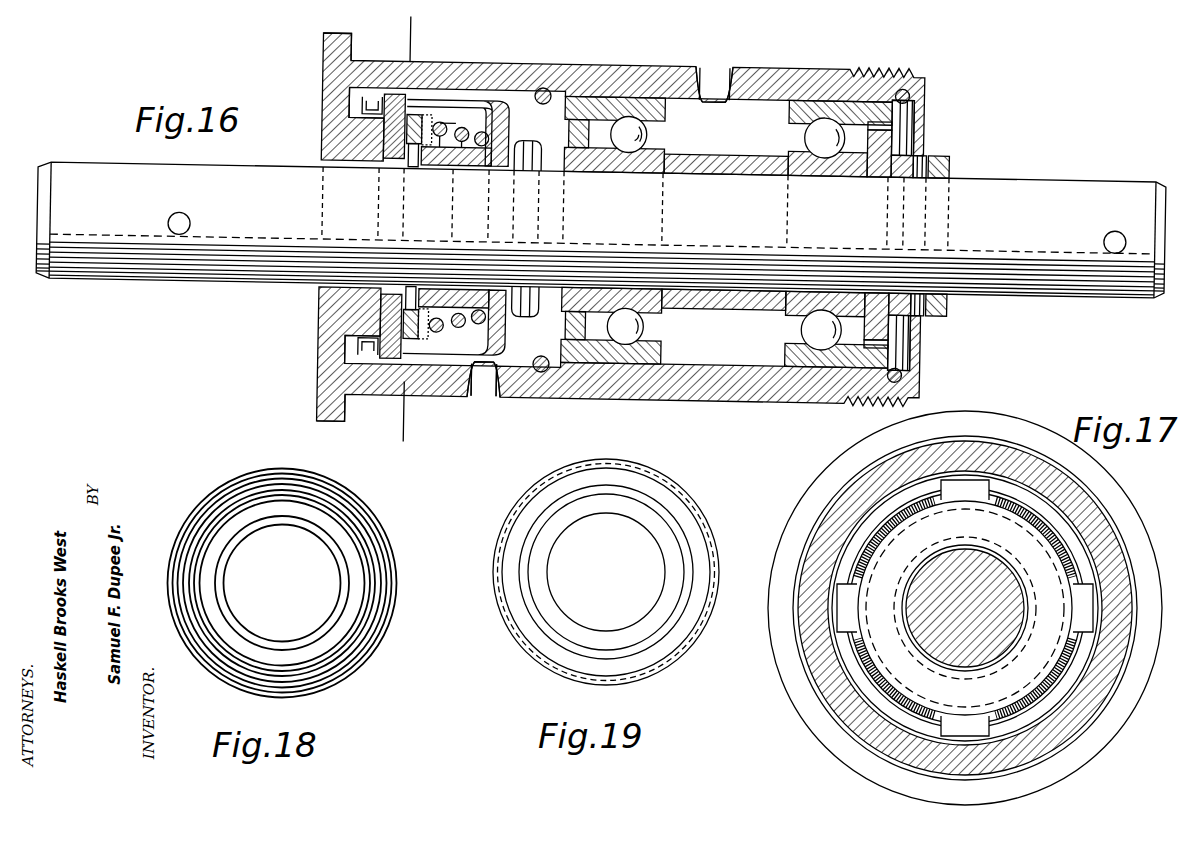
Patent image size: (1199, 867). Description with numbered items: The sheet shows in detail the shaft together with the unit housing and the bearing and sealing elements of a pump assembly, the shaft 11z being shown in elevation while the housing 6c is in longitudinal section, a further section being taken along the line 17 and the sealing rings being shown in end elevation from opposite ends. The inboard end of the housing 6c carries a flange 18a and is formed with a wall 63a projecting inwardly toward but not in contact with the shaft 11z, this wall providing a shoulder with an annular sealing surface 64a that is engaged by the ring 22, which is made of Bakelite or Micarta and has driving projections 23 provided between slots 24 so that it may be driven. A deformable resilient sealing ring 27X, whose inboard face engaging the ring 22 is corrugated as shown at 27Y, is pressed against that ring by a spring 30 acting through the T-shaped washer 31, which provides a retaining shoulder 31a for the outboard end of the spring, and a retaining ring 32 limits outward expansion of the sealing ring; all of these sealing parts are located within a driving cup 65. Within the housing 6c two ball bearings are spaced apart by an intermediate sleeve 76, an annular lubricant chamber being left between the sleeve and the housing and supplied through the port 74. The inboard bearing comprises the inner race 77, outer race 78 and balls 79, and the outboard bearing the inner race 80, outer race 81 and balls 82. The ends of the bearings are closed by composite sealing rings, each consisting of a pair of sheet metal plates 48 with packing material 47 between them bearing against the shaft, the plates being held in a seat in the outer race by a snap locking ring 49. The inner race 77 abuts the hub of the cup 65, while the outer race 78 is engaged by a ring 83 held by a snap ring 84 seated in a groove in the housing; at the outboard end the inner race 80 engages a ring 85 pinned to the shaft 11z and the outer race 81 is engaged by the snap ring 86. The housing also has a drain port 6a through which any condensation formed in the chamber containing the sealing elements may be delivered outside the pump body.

In FIG. 16, the oil passage 6a is at (496, 402).
In FIG. 16, the housing 6c is at (723, 400).
In FIG. 17, the housing 6c is at (1085, 506).
In FIG. 16, the shaft 11z is at (601, 230).
In FIG. 17, the shaft 11z is at (918, 600).
In FIG. 16, the section line 17 is at (400, 41).
In FIG. 16, the flange 18a is at (326, 52).
In FIG. 17, the flange 18a is at (832, 472).
In FIG. 17, the sealing ring 22 is at (965, 608).
In FIG. 17, the driving projections 23 is at (968, 486).
In FIG. 17, the slots 24 is at (1050, 543).
In FIG. 16, the sealing ring 27X is at (455, 170).
In FIG. 18, the sealing ring 27X is at (342, 590).
In FIG. 19, the sealing ring 27X is at (628, 513).
In FIG. 16, the corrugated face 27Y is at (382, 150).
In FIG. 18, the corrugated face 27Y is at (383, 565).
In FIG. 16, the spring 30 is at (467, 150).
In FIG. 16, the washer 31 is at (423, 168).
In FIG. 19, the washer 31 is at (692, 523).
In FIG. 16, the retaining shoulder 31a is at (448, 108).
In FIG. 19, the retaining shoulder 31a is at (527, 641).
In FIG. 16, the retaining ring 32 is at (424, 118).
In FIG. 19, the retaining ring 32 is at (595, 466).
In FIG. 16, the packing material 47 is at (580, 160).
In FIG. 16, the sheet metal plates 48 is at (893, 138).
In FIG. 16, the snap locking ring 49 is at (584, 114).
In FIG. 16, the wall 63a is at (338, 108).
In FIG. 16, the annular sealing surface 64a is at (372, 136).
In FIG. 16, the cup 65 is at (458, 365).
In FIG. 16, the port 74 is at (712, 74).
In FIG. 16, the intermediate sleeve 76 is at (718, 158).
In FIG. 16, the inner race 77 is at (616, 176).
In FIG. 16, the outer race 78 is at (620, 96).
In FIG. 16, the balls 79 is at (634, 124).
In FIG. 16, the inner race 80 is at (808, 178).
In FIG. 16, the outer race 81 is at (826, 94).
In FIG. 16, the balls 82 is at (806, 136).
In FIG. 16, the ring 83 is at (568, 98).
In FIG. 16, the snap ring 84 is at (544, 87).
In FIG. 16, the ring 85 is at (949, 157).
In FIG. 16, the snap ring 86 is at (901, 86).